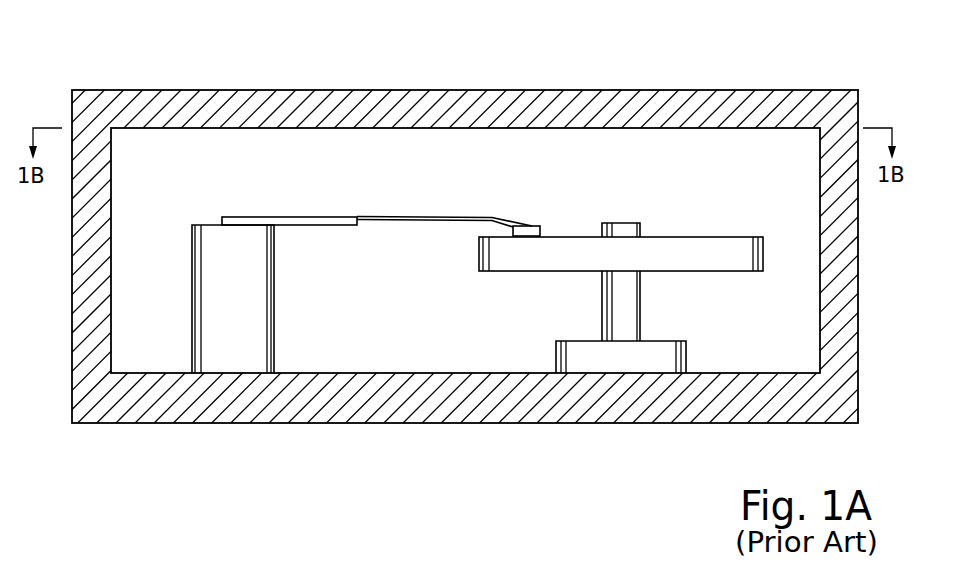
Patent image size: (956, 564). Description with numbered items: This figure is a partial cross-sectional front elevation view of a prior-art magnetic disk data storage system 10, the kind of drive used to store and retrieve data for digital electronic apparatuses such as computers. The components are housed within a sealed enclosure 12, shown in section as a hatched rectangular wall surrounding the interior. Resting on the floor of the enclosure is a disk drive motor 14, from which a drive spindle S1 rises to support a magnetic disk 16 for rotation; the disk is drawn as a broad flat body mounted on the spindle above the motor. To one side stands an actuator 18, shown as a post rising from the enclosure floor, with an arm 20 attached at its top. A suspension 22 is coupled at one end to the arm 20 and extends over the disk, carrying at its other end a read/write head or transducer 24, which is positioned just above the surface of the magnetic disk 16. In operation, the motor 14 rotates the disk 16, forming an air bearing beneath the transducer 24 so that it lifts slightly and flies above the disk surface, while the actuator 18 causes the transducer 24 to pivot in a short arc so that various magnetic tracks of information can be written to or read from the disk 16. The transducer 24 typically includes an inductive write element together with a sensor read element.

The magnetic disk data storage system 10 is at (800, 56).
The sealed enclosure 12 is at (452, 416).
The disk drive motor 14 is at (622, 357).
The magnetic disk 16 is at (705, 243).
The actuator 18 is at (258, 330).
The arm 20 is at (330, 220).
The suspension 22 is at (428, 217).
The read/write head or transducer 24 is at (533, 231).
The drive spindle S1 is at (630, 228).